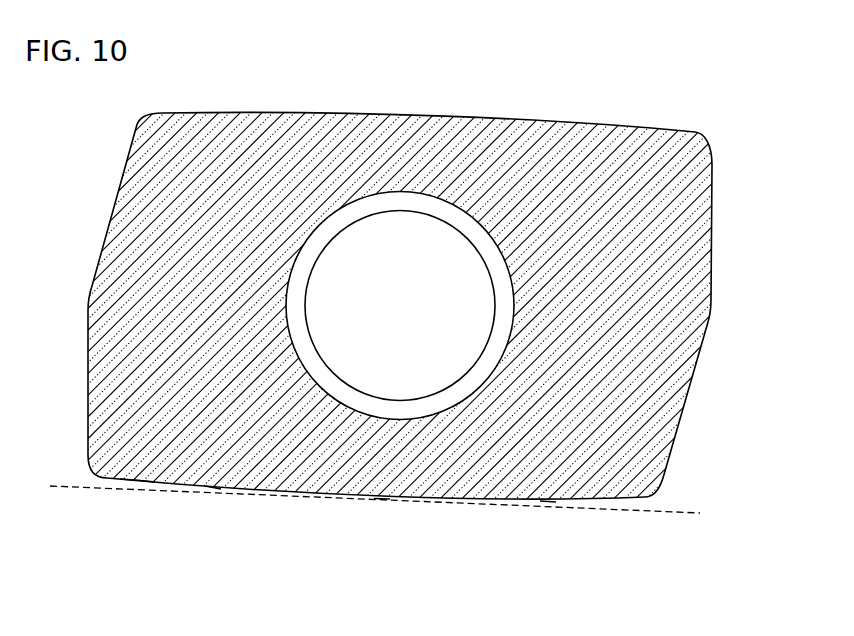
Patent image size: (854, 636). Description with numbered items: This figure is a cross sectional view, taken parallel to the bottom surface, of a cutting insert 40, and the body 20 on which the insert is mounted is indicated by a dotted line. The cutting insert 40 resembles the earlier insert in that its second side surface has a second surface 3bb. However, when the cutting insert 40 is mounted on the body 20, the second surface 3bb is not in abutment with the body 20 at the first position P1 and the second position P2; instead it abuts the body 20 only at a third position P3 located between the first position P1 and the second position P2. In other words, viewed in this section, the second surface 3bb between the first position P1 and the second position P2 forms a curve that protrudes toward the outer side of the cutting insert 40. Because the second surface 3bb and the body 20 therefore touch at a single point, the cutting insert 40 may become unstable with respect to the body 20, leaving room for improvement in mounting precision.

The cutting insert 40 is at (707, 428).
The body 20 is at (637, 513).
The second surface 3bb is at (138, 479).
The first position P1 is at (213, 488).
The second position P2 is at (548, 502).
The third position P3 is at (382, 499).